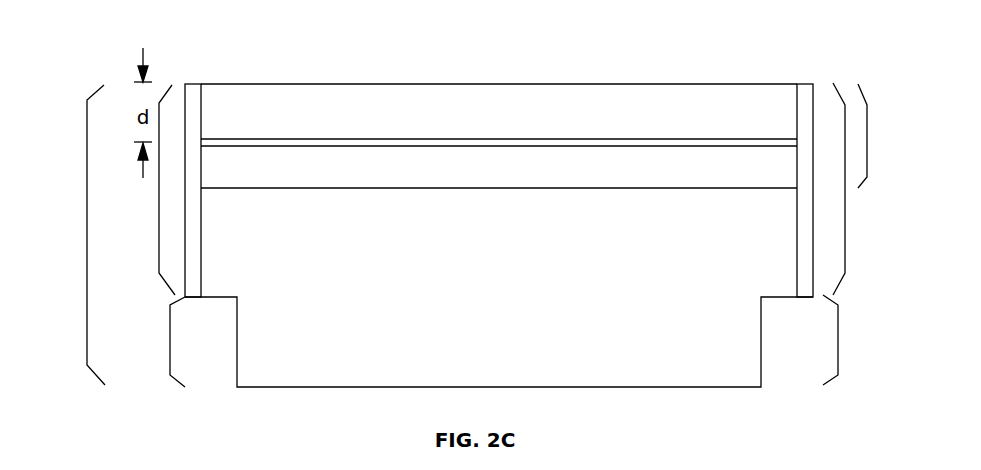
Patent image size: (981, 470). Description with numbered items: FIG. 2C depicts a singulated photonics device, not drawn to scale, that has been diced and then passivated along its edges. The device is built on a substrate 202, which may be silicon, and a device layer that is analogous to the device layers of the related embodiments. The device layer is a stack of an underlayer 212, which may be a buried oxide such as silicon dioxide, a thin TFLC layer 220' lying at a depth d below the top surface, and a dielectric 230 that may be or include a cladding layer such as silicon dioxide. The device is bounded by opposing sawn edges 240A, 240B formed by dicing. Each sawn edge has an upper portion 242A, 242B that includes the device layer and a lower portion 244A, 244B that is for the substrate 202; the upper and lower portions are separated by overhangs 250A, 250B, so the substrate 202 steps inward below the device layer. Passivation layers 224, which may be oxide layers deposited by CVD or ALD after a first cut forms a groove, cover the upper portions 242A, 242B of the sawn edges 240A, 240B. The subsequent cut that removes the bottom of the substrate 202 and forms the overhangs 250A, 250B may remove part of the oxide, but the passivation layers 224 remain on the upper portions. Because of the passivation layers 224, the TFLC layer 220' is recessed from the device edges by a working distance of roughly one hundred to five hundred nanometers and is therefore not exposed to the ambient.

The passivation layer 224 is at (192, 84).
The TFLC layer 220' is at (499, 100).
The dielectric 230 is at (593, 120).
The underlayer 212 is at (605, 175).
The substrate 202 is at (593, 300).
The upper portion 242A is at (159, 190).
The upper portion 242B is at (845, 198).
The sawn edge 240A is at (87, 235).
The sawn edge 240B is at (883, 232).
The lower portion 244A is at (170, 343).
The lower portion 244B is at (838, 342).
The overhang 250A is at (224, 314).
The overhang 250B is at (785, 317).